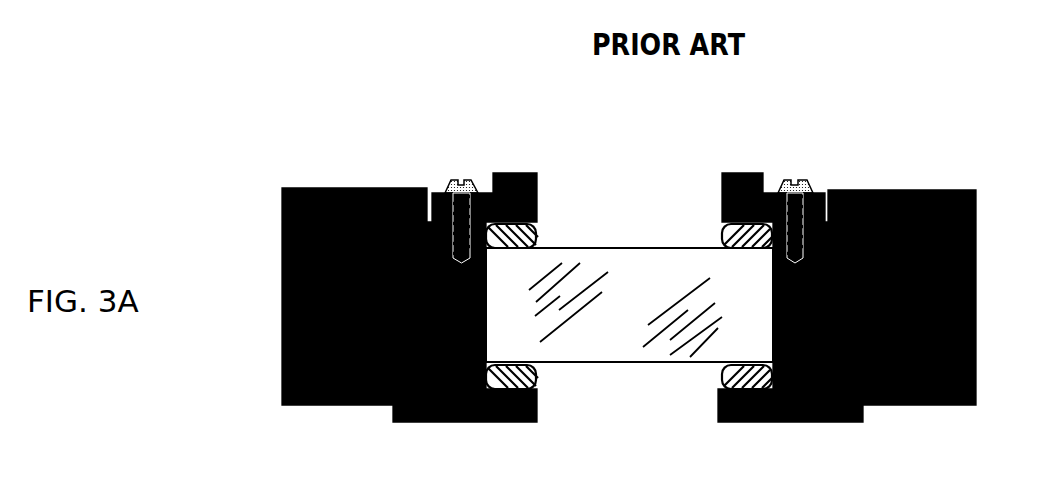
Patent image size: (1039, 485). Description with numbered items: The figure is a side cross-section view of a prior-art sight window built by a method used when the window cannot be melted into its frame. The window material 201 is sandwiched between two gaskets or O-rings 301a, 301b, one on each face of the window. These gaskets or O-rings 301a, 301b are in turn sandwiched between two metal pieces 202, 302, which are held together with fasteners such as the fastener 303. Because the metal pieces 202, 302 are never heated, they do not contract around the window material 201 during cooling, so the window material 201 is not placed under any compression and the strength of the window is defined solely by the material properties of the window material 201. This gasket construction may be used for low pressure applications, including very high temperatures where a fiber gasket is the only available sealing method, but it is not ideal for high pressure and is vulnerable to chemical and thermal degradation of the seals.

The window material 201 is at (634, 363).
The metal piece 202 is at (943, 190).
The gasket or O-ring 301a is at (720, 228).
The gasket or O-ring 301b is at (722, 385).
The metal piece 302 is at (736, 173).
The fastener 303 is at (793, 179).